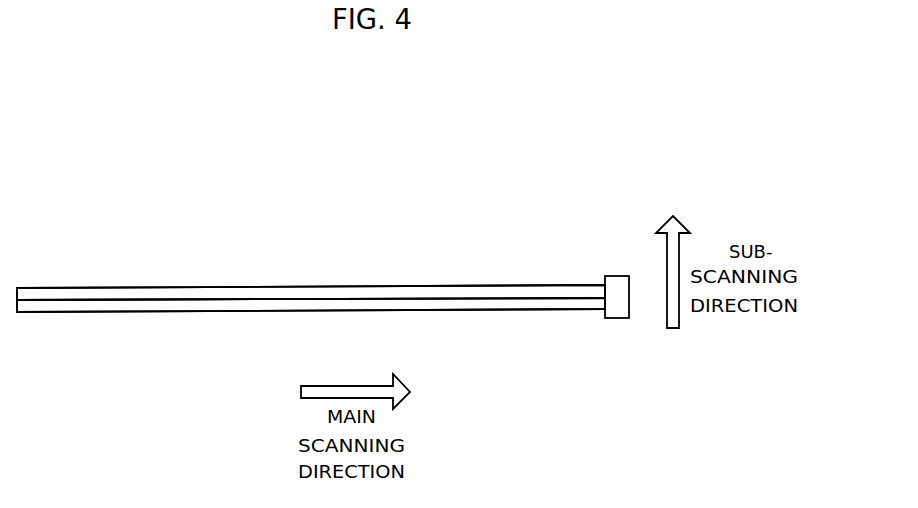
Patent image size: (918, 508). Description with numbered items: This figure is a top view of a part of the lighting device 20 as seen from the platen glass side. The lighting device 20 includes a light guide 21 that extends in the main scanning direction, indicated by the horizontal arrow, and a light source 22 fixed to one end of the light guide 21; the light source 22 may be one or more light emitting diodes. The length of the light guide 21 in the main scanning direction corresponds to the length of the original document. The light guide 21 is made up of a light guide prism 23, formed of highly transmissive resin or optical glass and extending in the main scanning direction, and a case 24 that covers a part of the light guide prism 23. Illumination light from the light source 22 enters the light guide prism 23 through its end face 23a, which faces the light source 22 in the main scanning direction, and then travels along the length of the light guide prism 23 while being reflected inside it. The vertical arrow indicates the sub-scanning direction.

The lighting device 20 is at (482, 240).
The light guide 21 is at (307, 212).
The light source 22 is at (613, 305).
The light guide prism 23 is at (287, 296).
The end face 23a is at (605, 299).
The case 24 is at (239, 308).